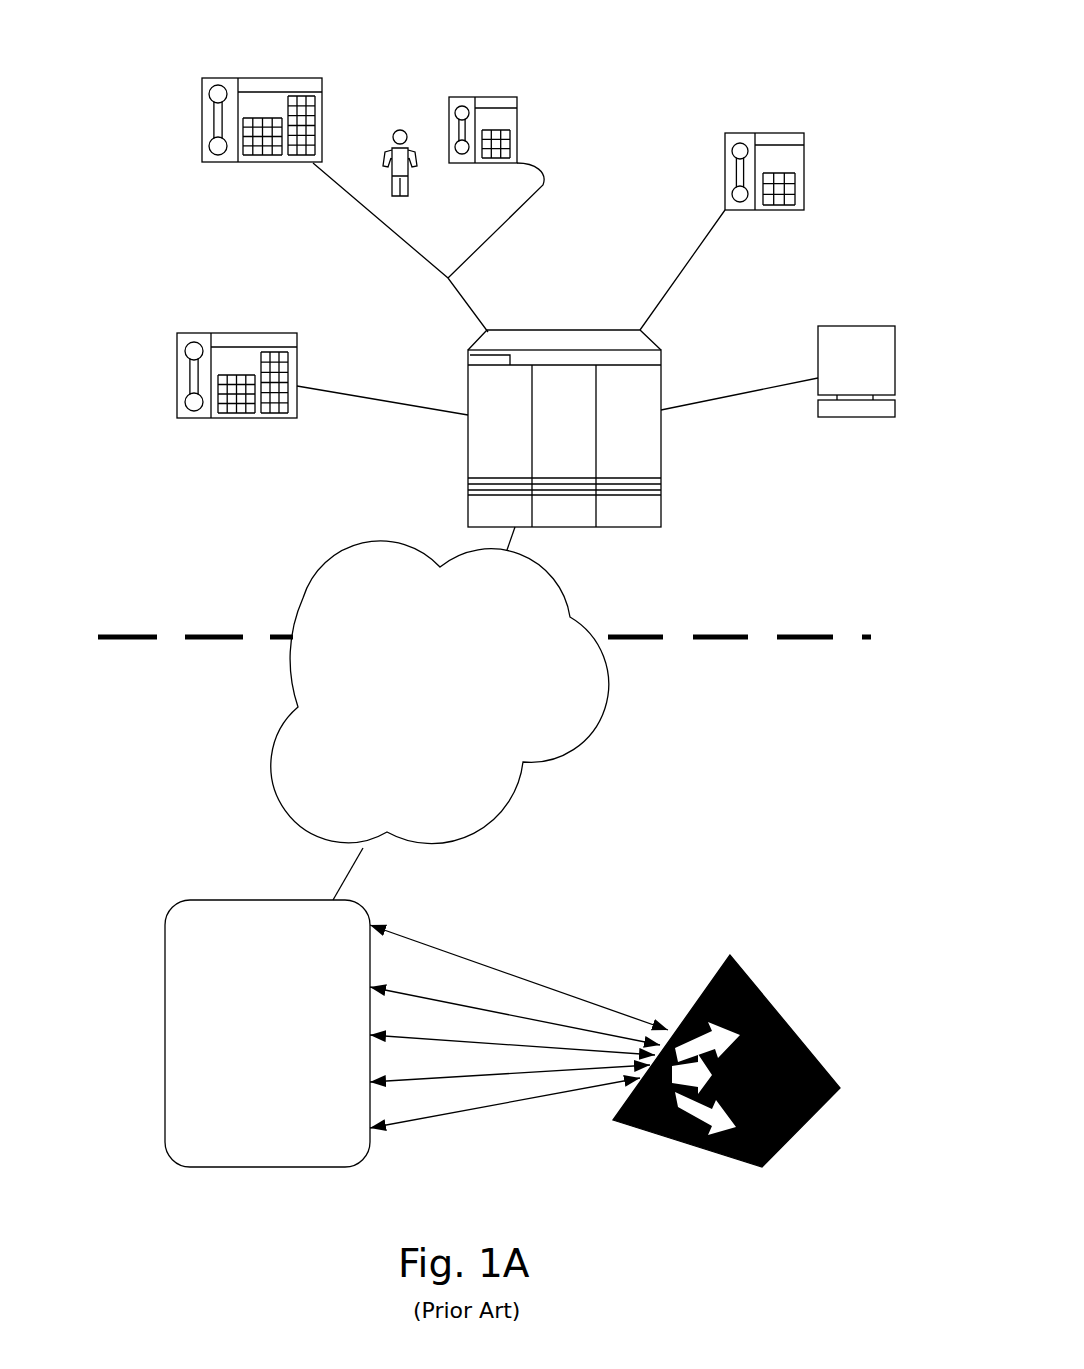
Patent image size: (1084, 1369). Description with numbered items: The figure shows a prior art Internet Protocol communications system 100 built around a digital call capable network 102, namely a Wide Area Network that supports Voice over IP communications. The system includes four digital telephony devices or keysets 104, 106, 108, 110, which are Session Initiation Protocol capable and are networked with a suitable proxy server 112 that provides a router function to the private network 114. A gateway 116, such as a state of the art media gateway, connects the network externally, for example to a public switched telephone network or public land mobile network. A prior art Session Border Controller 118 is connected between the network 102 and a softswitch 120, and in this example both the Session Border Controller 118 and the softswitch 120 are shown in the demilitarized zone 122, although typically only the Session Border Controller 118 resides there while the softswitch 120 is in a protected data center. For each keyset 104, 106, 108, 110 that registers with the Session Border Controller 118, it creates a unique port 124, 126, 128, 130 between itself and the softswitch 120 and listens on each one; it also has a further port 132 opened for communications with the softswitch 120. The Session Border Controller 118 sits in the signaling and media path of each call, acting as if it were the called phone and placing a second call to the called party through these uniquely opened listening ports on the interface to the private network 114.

The Internet Protocol communications system 100 is at (228, 1203).
The digital call capable network 102 is at (312, 592).
The keyset 104 is at (517, 98).
The keyset 106 is at (238, 78).
The keyset 108 is at (800, 133).
The keyset 110 is at (213, 333).
The proxy server 112 is at (468, 388).
The private network 114 is at (806, 515).
The gateway 116 is at (822, 326).
The Session Border Controller 118 is at (190, 900).
The softswitch 120 is at (757, 982).
The demilitarized zone 122 is at (515, 884).
The port 124 is at (510, 1069).
The port 126 is at (515, 1004).
The port 128 is at (505, 1103).
The port 130 is at (512, 1033).
The port 132 is at (519, 972).